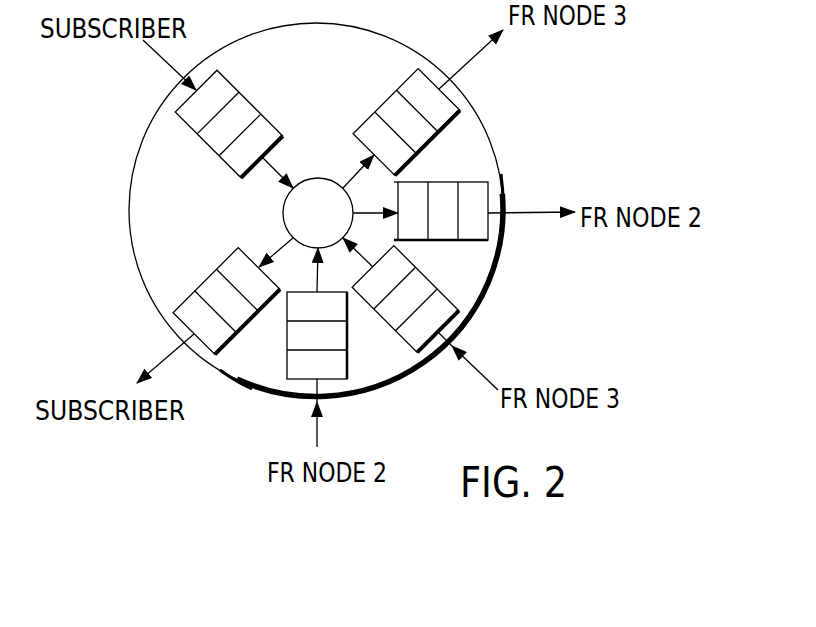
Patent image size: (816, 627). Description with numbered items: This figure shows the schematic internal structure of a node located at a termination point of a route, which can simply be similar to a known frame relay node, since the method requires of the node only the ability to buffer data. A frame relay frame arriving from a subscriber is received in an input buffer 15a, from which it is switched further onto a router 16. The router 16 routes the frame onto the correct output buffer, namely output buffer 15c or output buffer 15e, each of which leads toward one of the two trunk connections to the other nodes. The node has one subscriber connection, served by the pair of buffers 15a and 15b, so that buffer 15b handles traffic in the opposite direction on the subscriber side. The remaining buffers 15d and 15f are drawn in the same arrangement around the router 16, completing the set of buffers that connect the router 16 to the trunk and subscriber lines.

The input buffer 15a is at (248, 101).
The buffer 15b is at (189, 297).
The output buffer 15c is at (433, 143).
The interface unit 15d is at (374, 312).
The output buffer 15e is at (447, 242).
The interface unit 15f is at (287, 338).
The router 16 is at (313, 189).